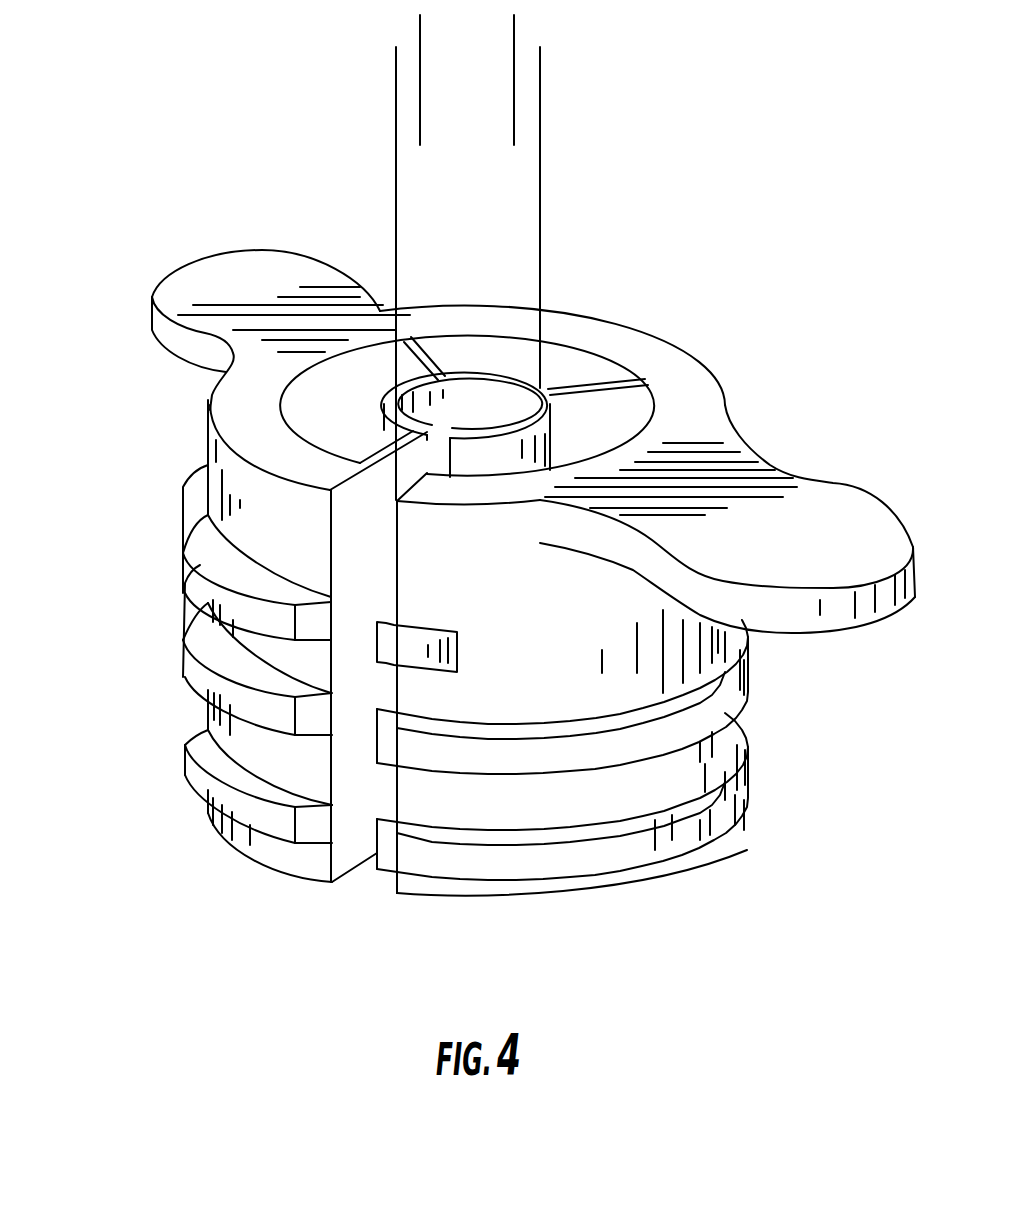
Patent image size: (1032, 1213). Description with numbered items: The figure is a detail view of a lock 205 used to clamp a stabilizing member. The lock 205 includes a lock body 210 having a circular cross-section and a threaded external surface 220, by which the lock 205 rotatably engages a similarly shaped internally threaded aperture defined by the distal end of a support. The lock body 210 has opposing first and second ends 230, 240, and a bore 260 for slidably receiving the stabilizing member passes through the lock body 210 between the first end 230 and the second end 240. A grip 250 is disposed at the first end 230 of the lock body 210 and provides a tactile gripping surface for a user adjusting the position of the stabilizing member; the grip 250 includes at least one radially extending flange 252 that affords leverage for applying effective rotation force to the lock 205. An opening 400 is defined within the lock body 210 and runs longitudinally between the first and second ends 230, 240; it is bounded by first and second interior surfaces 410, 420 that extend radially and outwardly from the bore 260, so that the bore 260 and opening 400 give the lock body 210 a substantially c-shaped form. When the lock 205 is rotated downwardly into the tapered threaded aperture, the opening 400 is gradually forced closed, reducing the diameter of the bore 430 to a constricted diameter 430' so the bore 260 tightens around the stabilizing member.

The lock 205 is at (713, 215).
The lock body 210 is at (627, 670).
The threaded external surface 220 is at (243, 595).
The first end 230 is at (680, 370).
The second end 240 is at (572, 857).
The grip 250 is at (790, 520).
The radially extending flange 252 is at (230, 272).
The bore 260 is at (481, 415).
The opening 400 is at (370, 503).
The first interior surface 410 is at (343, 833).
The second interior surface 420 is at (388, 878).
The diameter of the bore 430 is at (517, 273).
The constricted diameter 430' is at (491, 76).